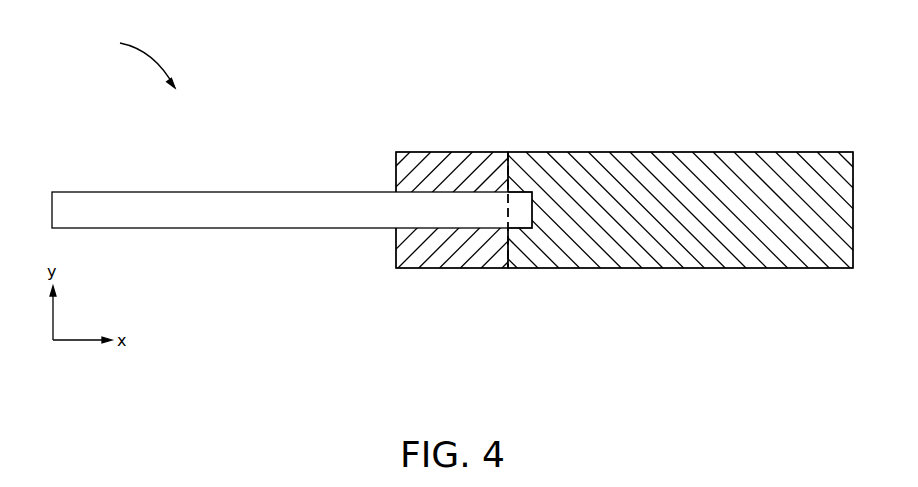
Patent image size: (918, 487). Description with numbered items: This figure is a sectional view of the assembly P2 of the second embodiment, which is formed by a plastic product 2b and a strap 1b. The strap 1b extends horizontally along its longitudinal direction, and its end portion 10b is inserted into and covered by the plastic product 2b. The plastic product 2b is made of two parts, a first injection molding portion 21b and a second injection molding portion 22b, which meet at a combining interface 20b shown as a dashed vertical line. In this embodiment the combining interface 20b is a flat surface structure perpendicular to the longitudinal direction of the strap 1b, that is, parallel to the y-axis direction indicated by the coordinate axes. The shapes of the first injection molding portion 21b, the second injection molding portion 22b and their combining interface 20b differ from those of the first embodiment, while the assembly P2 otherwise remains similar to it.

The strap 1b is at (145, 192).
The plastic product 2b is at (683, 152).
The end portion 10b is at (533, 197).
The combining interface 20b is at (510, 268).
The first injection molding portion 21b is at (397, 255).
The second injection molding portion 22b is at (728, 268).
The assembly P2 is at (131, 61).